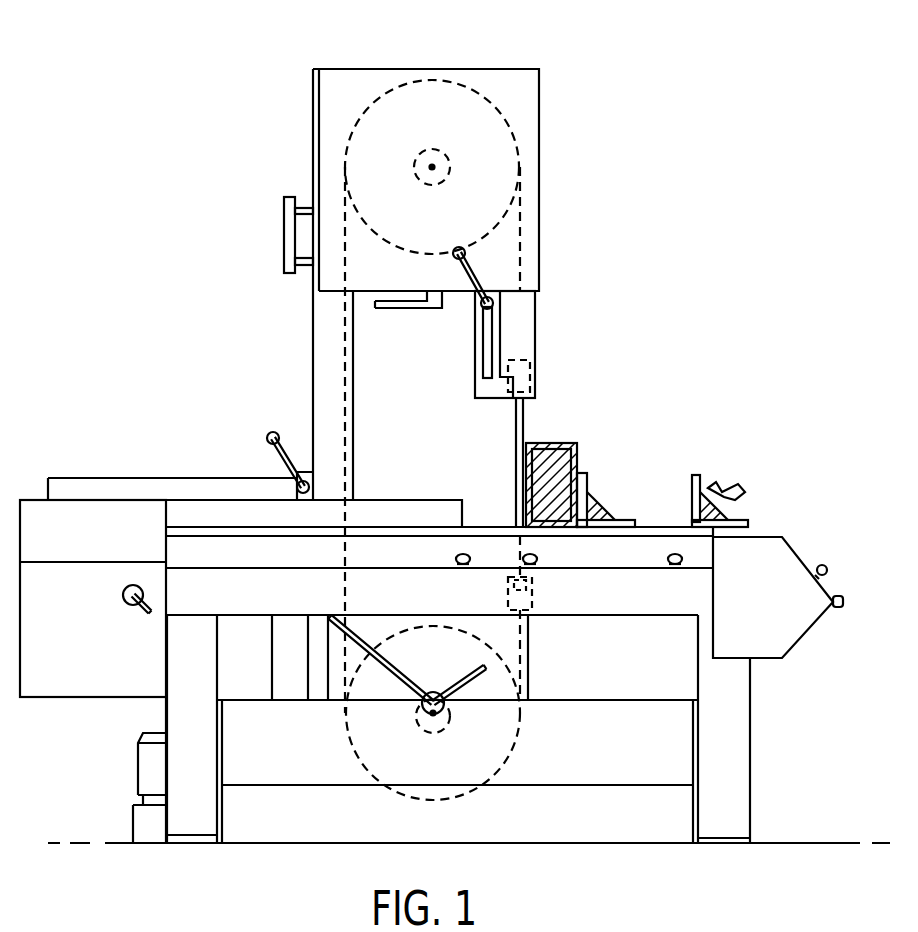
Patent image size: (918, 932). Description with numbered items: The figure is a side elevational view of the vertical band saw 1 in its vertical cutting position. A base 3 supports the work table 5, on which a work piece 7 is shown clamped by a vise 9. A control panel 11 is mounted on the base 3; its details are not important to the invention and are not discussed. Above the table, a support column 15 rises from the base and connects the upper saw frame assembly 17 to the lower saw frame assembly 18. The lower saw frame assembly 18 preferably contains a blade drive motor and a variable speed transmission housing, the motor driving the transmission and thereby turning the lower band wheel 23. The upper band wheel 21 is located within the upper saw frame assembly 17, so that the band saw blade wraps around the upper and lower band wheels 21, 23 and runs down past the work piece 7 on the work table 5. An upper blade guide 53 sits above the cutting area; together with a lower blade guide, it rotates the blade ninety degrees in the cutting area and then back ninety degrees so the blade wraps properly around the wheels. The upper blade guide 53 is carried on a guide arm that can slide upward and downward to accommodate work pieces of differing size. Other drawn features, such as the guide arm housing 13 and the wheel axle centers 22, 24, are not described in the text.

The vertical band saw 1 is at (144, 150).
The base 3 is at (167, 726).
The work table 5 is at (645, 552).
The work piece 7 is at (562, 442).
The vise 9 is at (587, 494).
The control panel 11 is at (785, 555).
The blade guide arm 13 is at (525, 328).
The support column 15 is at (318, 373).
The upper saw frame assembly 17 is at (353, 82).
The lower saw frame assembly 18 is at (353, 657).
The upper band wheel 21 is at (498, 148).
The upper wheel axle 22 is at (432, 165).
The lower band wheel 23 is at (492, 740).
The lower wheel axle 24 is at (433, 715).
The upper blade guide 53 is at (532, 368).